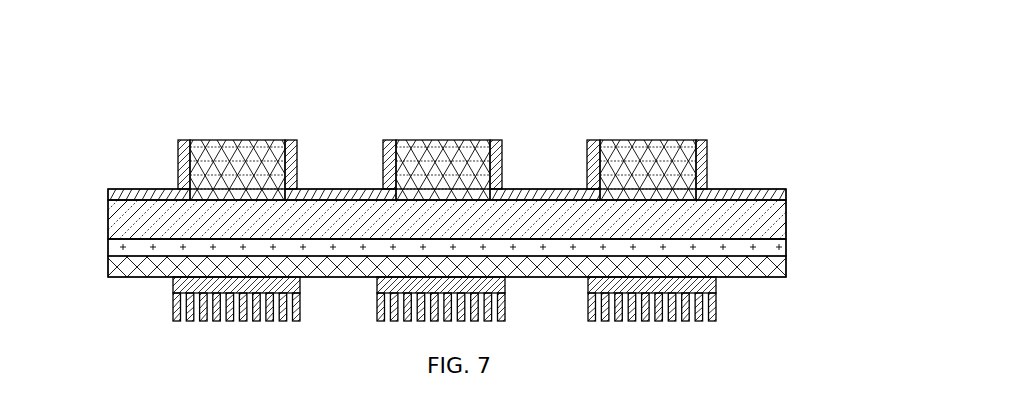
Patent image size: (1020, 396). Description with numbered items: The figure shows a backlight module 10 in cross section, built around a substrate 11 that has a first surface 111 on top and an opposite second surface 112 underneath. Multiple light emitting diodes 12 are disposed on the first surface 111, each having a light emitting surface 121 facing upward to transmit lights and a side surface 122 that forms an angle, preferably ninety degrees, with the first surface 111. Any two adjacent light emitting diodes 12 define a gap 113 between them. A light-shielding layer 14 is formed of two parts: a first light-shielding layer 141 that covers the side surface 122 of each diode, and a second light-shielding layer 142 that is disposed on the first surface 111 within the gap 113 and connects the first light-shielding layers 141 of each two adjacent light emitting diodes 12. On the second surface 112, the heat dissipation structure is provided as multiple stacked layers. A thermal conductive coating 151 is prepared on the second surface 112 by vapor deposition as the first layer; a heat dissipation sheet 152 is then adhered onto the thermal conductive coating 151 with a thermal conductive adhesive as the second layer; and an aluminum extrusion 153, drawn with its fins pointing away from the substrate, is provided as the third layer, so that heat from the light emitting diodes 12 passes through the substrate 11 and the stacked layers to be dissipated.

The backlight module 10 is at (63, 22).
The substrate 11 is at (120, 217).
The first surface 111 is at (788, 202).
The second surface 112 is at (788, 242).
The gap 113 is at (518, 176).
The light emitting diode 12 is at (193, 180).
The light emitting surface 121 is at (643, 140).
The side surface 122 is at (708, 172).
The light-shielding layer 14 is at (423, 82).
The first light-shielding layer 141 is at (298, 140).
The second light-shielding layer 142 is at (335, 190).
The thermal conductive coating 151 is at (112, 248).
The heat dissipation sheet 152 is at (112, 270).
The aluminum extrusion 153 is at (178, 285).